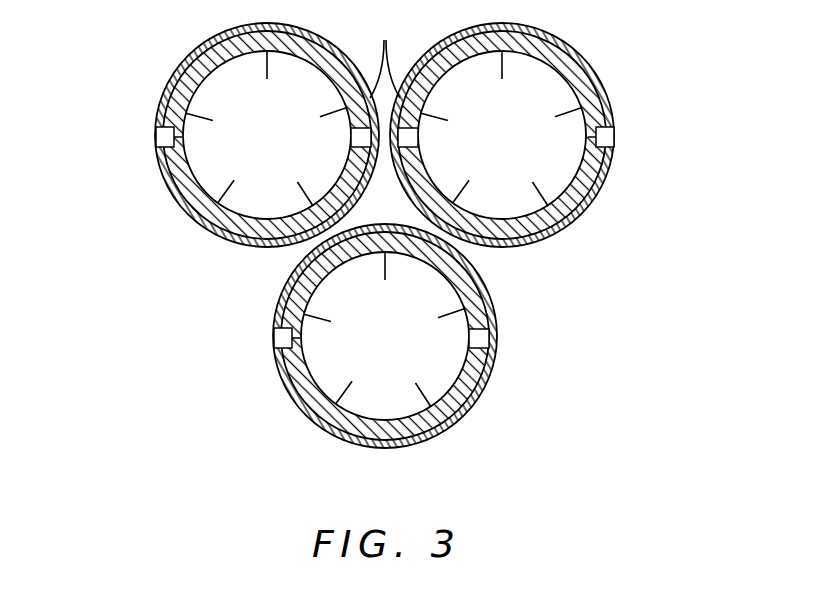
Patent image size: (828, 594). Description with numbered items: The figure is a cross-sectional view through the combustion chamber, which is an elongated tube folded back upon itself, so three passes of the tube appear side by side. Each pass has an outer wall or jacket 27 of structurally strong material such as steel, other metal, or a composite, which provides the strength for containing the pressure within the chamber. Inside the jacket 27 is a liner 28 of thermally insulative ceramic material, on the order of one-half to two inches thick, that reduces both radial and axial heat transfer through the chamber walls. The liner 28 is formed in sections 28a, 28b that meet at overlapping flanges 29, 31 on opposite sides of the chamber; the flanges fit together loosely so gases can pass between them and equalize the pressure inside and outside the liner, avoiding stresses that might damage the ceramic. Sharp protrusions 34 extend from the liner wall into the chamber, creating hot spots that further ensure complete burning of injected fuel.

The outer wall or jacket 27 is at (170, 184).
The liner 28 is at (188, 70).
The liner section 28a is at (400, 97).
The liner section 28b is at (265, 232).
The overlapping flange 29 is at (351, 126).
The overlapping flange 31 is at (160, 132).
The sharp protrusions 34 is at (207, 116).